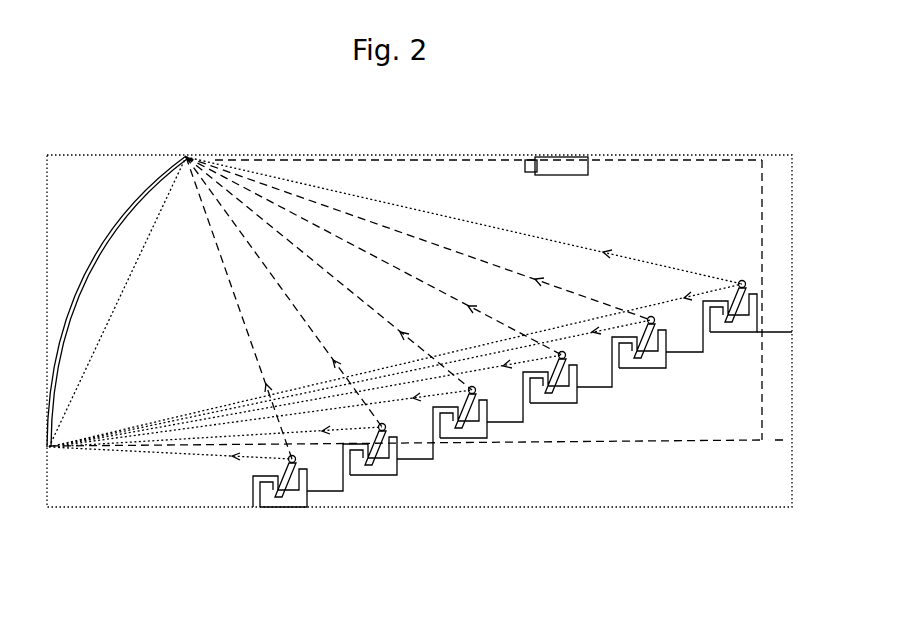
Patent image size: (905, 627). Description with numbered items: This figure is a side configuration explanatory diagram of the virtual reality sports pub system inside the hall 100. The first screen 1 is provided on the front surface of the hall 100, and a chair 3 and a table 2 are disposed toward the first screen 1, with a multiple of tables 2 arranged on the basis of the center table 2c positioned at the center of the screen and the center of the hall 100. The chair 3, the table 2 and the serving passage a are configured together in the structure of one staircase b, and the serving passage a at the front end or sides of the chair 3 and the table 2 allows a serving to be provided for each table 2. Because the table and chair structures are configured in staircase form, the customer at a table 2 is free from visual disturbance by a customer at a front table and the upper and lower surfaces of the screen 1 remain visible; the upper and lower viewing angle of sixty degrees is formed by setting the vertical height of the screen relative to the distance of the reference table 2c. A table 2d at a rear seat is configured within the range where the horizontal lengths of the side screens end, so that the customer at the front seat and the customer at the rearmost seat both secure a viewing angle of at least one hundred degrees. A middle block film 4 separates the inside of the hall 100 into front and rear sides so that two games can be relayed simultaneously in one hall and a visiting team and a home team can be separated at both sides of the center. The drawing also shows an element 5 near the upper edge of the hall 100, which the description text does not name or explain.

The hall 100 is at (481, 167).
The first screen 1 is at (60, 353).
The table 2 is at (252, 490).
The center table 2c is at (484, 440).
The table at a rear seat 2d is at (742, 334).
The chair 3 is at (293, 510).
The middle block film 4 is at (294, 462).
The sensor unit 5 is at (590, 175).
The serving passage a is at (464, 323).
The staircase b is at (395, 391).